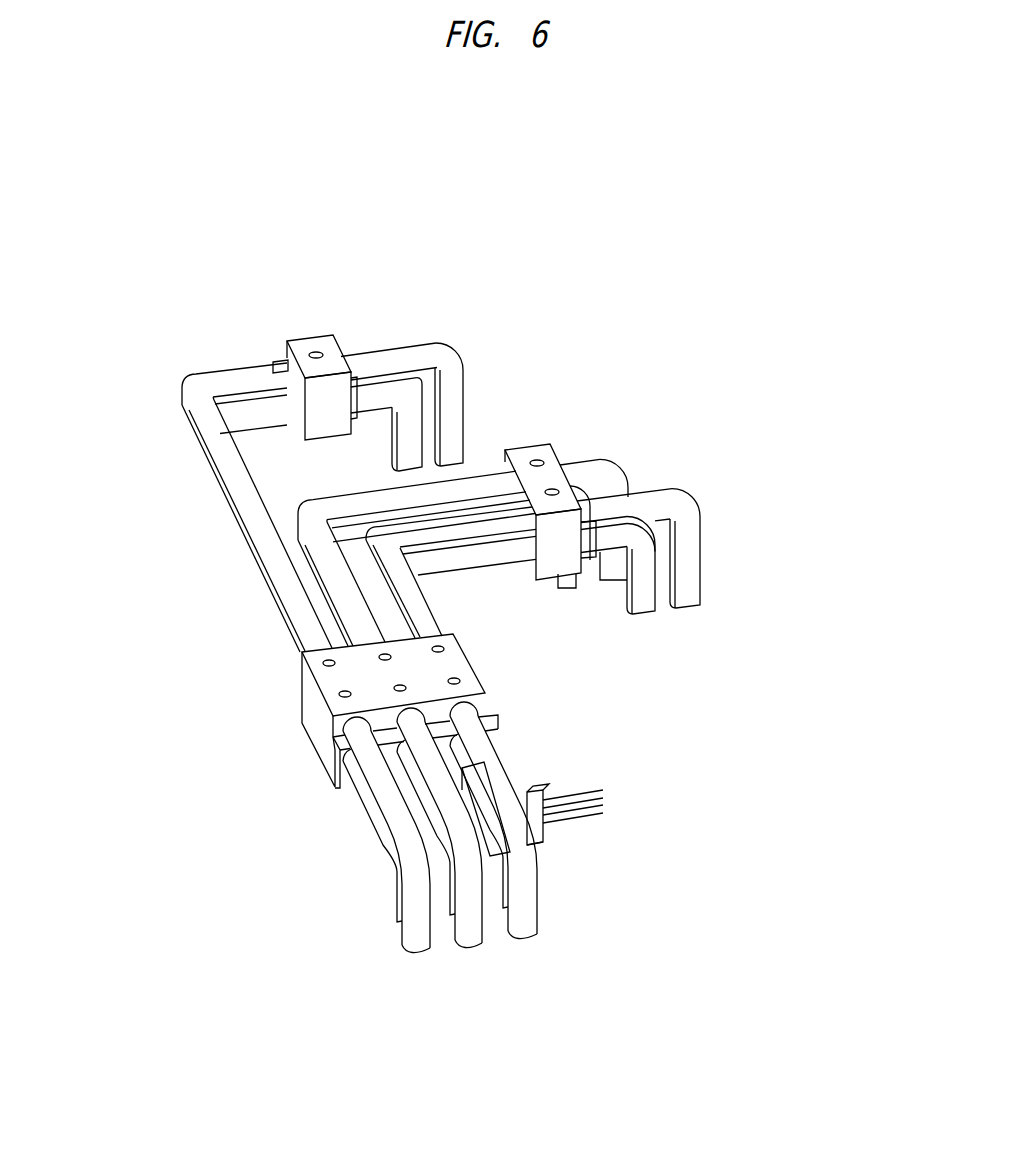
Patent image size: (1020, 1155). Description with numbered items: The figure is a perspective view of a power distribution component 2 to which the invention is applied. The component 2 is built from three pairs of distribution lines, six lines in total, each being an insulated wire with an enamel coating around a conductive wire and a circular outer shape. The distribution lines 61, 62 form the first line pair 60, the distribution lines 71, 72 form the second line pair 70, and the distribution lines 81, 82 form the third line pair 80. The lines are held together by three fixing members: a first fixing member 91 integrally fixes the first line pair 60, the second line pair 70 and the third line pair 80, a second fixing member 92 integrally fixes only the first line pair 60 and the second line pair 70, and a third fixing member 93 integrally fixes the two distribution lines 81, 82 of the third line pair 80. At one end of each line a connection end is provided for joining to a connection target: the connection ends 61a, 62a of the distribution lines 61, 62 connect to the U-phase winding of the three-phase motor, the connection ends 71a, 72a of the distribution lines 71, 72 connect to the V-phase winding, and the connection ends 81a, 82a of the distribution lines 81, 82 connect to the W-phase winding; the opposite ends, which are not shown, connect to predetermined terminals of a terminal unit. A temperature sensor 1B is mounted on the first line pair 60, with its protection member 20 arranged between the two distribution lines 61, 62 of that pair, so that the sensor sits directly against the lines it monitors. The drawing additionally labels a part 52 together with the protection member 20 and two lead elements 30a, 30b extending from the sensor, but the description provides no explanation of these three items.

The power distribution component 2 is at (198, 266).
The temperature sensor 1B is at (553, 845).
The protection member 20 is at (540, 792).
The terminal portion 52 is at (505, 809).
The electric wire 30a is at (601, 797).
The electric wire 30b is at (603, 818).
The first line pair 60 is at (790, 437).
The distribution line 61 is at (672, 487).
The distribution line 62 is at (655, 541).
The connection end 61a is at (688, 603).
The connection end 62a is at (641, 608).
The second line pair 70 is at (142, 515).
The distribution line 71 is at (318, 557).
The distribution line 72 is at (320, 597).
The connection end 71a is at (607, 574).
The connection end 72a is at (562, 584).
The third line pair 80 is at (80, 385).
The distribution line 81 is at (205, 418).
The distribution line 82 is at (203, 457).
The connection end 81a is at (457, 453).
The connection end 82a is at (413, 442).
The first fixing member 91 is at (322, 748).
The second fixing member 92 is at (543, 452).
The third fixing member 93 is at (325, 343).